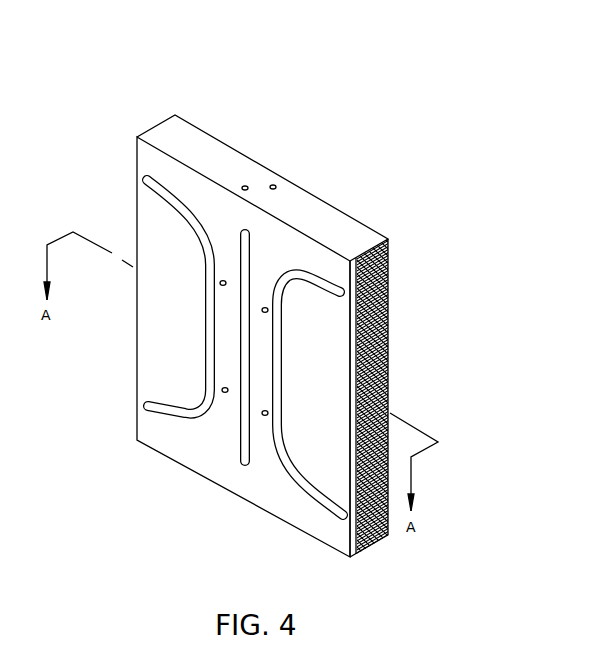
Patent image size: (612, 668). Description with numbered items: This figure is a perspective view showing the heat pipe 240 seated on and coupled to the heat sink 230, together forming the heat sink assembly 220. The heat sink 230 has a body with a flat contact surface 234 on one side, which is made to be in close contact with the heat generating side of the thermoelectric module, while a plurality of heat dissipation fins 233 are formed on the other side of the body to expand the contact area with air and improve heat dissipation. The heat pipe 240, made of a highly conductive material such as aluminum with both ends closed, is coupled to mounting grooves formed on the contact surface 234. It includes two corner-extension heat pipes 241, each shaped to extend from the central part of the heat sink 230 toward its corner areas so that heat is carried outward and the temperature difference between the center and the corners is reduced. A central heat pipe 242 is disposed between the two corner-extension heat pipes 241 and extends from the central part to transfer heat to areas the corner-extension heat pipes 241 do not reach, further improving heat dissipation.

The heat sink assembly 220 is at (162, 40).
The heat sink 230 is at (117, 349).
The heat dissipation fins 233 is at (386, 309).
The contact surface 234 is at (327, 347).
The heat pipe 240 is at (353, 163).
The corner-extension heat pipe 241 is at (173, 188).
The central heat pipe 242 is at (245, 228).